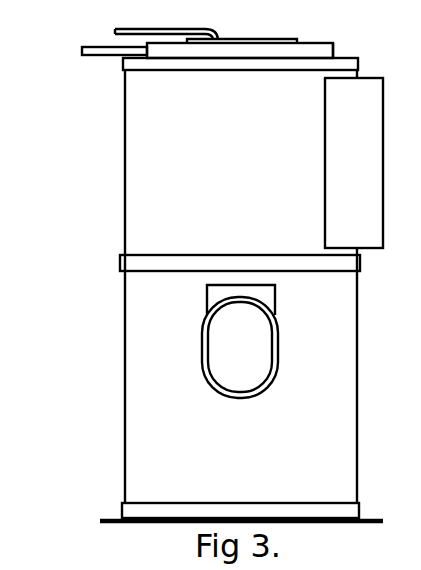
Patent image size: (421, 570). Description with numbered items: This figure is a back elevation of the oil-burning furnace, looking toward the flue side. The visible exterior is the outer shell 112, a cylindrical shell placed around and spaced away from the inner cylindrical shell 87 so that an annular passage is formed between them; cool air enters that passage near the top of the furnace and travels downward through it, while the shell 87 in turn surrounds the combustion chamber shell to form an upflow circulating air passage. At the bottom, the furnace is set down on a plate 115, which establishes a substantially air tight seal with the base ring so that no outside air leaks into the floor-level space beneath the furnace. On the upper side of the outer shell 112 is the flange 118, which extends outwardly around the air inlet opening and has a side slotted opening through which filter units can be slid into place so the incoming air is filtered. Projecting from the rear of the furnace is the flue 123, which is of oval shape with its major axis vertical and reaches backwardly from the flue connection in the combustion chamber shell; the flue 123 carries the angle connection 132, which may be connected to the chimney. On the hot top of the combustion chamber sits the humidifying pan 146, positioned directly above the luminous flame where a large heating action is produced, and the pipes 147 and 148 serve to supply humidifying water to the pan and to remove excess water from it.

The cylindrical shell 87 is at (333, 44).
The outer shell 112 is at (240, 288).
The plate 115 is at (100, 520).
The flange 118 is at (354, 163).
The flue 123 is at (203, 376).
The angle connection 132 is at (275, 291).
The humidifying pan 146 is at (275, 39).
The pipe 147 is at (138, 29).
The pipe 148 is at (85, 47).